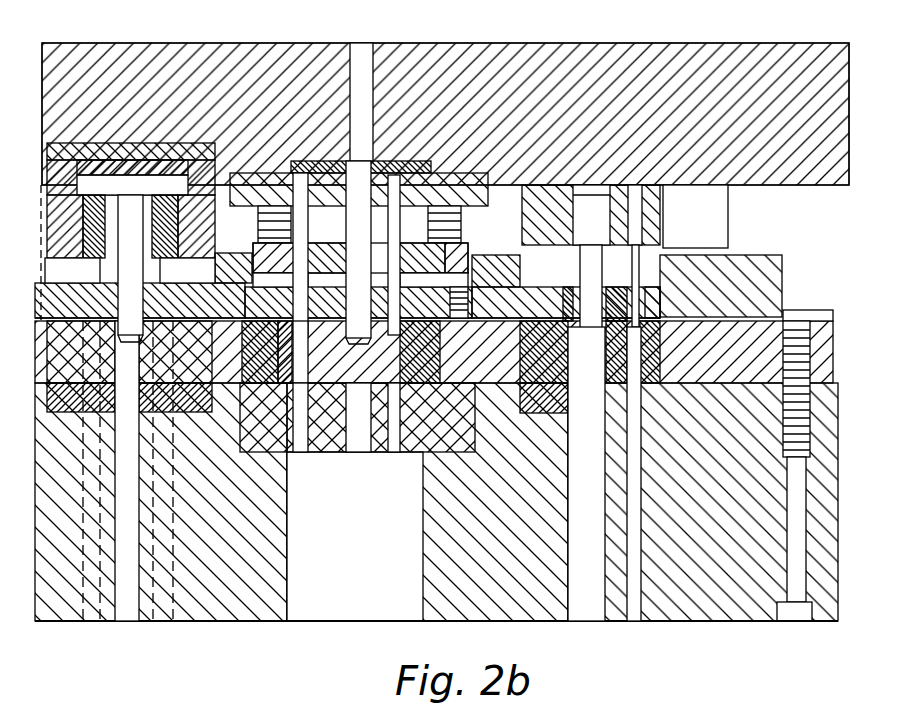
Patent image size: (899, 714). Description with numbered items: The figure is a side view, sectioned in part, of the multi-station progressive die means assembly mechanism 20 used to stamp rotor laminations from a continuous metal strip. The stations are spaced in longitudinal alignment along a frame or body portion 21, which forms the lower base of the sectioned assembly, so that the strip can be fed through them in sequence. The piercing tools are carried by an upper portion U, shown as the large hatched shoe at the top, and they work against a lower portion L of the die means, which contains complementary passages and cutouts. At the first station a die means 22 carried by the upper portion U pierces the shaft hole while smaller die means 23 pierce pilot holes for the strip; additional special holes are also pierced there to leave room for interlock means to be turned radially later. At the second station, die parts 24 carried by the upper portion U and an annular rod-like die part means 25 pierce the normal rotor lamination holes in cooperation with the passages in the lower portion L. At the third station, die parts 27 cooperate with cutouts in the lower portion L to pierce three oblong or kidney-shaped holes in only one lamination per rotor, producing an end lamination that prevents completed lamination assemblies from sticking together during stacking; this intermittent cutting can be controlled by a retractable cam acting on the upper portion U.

The multi-station progressive die means assembly mechanism 20 is at (238, 31).
The frame or body portion 21 is at (50, 422).
The die means 22 is at (587, 216).
The smaller die means 23 is at (637, 185).
The die parts 24 is at (300, 224).
The annular rod-like die part means 25 is at (395, 176).
The die parts 27 is at (92, 273).
The upper portion U is at (838, 84).
The lower portion L is at (835, 357).